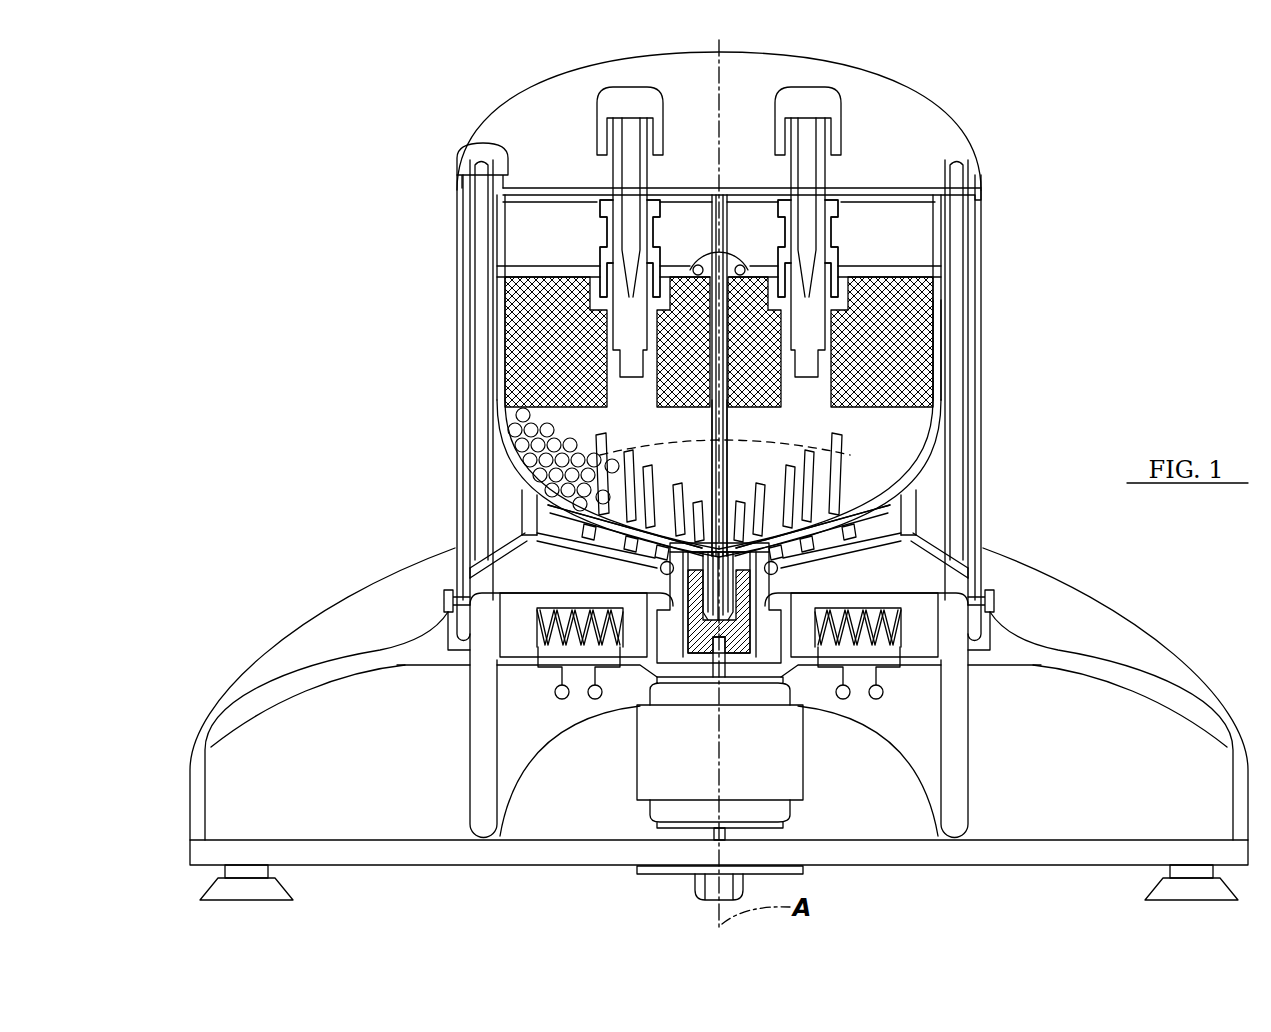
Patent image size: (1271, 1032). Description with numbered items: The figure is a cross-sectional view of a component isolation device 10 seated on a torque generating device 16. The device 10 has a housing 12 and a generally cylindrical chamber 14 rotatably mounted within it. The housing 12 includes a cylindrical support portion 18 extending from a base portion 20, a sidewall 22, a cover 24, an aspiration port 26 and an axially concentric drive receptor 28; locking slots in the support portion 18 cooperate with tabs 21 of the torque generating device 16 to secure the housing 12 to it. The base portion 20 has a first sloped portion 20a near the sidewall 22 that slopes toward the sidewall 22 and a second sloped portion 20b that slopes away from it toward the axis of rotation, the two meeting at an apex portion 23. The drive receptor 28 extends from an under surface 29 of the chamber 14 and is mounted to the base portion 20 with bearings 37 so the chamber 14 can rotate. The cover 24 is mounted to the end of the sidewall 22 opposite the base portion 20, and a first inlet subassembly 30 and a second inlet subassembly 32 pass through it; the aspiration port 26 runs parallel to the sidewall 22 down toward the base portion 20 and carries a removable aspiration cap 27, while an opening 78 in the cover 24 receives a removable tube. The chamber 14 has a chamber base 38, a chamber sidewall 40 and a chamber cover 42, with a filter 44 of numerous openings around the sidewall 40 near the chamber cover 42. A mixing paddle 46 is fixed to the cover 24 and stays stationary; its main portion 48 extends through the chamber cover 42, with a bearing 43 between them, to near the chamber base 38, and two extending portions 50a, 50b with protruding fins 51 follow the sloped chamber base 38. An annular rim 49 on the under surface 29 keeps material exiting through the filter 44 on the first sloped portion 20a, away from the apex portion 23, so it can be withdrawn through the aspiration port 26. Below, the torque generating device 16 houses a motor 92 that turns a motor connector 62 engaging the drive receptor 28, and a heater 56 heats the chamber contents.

The component isolation device 10 is at (1030, 158).
The housing 12 is at (987, 307).
The chamber 14 is at (945, 289).
The torque generating device 16 is at (222, 693).
The cylindrical support portion 18 is at (997, 630).
The base portion 20 is at (517, 545).
The first sloped portion 20a is at (476, 558).
The second sloped portion 20b is at (600, 540).
The tabs 21 is at (443, 595).
The sidewall 22 is at (966, 340).
The apex portion 23 is at (520, 490).
The cover 24 is at (952, 145).
The aspiration port 26 is at (484, 250).
The aspiration cap 27 is at (466, 147).
The drive receptor 28 is at (673, 597).
The under surface 29 is at (650, 540).
The first inlet subassembly 30 is at (840, 128).
The second inlet subassembly 32 is at (600, 130).
The bearings 37 is at (780, 576).
The chamber base 38 is at (852, 517).
The chamber sidewall 40 is at (513, 307).
The chamber cover 42 is at (913, 270).
The bearing 43 is at (745, 263).
The filter 44 is at (527, 353).
The mixing paddle 46 is at (735, 415).
The main portion 48 is at (712, 227).
The annular rim 49 is at (525, 515).
The extending portion 50a is at (800, 480).
The extending portion 50b is at (660, 497).
The fins 51 is at (560, 507).
The heater 56 is at (556, 690).
The motor connector 62 is at (700, 640).
The opening 78 is at (611, 146).
The motor 92 is at (772, 772).